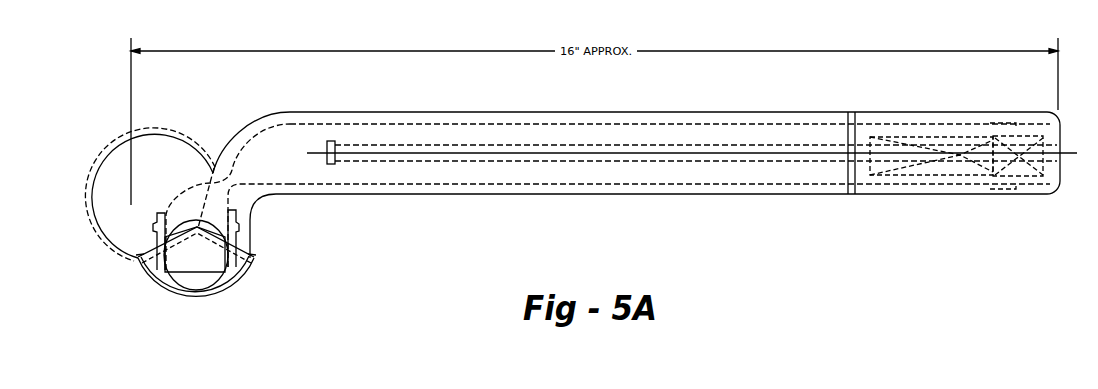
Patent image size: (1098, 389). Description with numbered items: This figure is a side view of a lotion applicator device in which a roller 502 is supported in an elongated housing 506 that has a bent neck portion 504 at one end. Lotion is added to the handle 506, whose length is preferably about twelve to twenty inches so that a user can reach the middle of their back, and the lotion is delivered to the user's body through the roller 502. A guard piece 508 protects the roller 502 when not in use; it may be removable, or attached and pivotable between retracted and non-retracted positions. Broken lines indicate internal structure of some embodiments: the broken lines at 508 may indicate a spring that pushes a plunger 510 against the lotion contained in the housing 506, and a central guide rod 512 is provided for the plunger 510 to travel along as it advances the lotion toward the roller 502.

The roller 502 is at (195, 280).
The bent neck portion 504 is at (257, 91).
The elongated housing 506 is at (690, 196).
The guard piece 508 is at (238, 280).
The plunger 510 is at (851, 196).
The central guide rod 512 is at (352, 158).